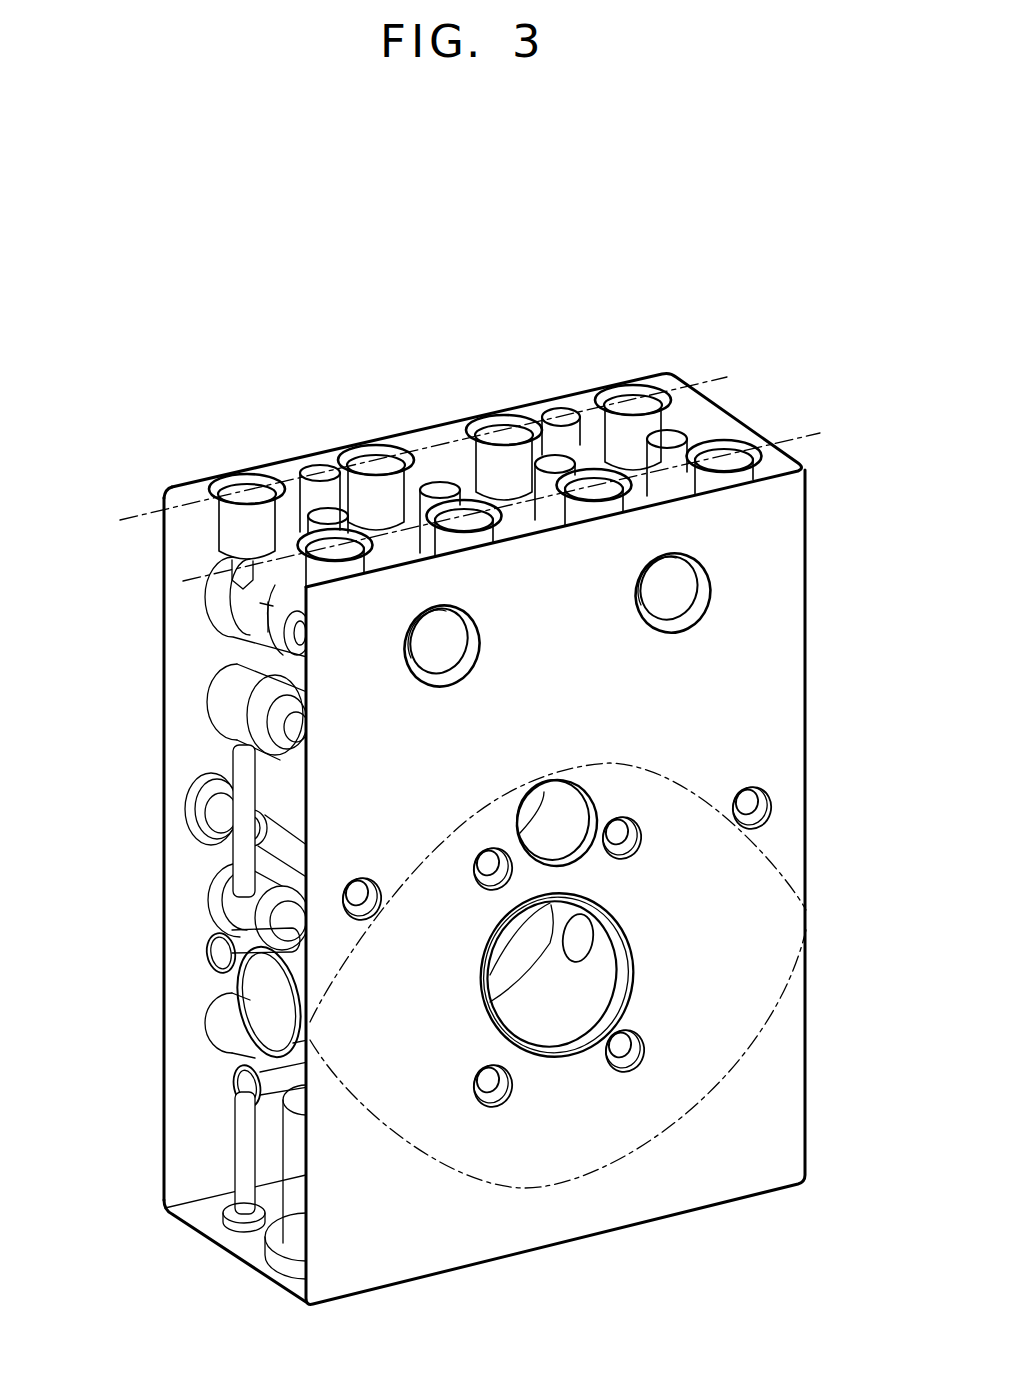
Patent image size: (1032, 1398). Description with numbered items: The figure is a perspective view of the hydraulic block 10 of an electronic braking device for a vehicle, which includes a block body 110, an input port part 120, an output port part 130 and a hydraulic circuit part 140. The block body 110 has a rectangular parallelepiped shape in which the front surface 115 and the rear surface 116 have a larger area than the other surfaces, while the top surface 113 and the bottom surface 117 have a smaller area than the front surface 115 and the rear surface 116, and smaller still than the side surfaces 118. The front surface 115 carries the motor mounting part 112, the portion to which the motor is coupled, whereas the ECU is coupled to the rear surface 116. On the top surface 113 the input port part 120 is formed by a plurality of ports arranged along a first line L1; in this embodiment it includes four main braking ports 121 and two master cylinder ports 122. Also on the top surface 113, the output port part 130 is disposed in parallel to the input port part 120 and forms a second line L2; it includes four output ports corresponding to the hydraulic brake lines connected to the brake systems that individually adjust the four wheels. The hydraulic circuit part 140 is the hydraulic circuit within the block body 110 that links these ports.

The hydraulic block 10 is at (701, 348).
The block body 110 is at (158, 825).
The motor mounting part 112 is at (772, 875).
The top surface 113 is at (732, 428).
The front surface 115 is at (780, 712).
The rear surface 116 is at (165, 927).
The bottom surface 117 is at (222, 1257).
The side surface 118 is at (203, 753).
The input port part 120 is at (193, 330).
The main braking port 121 is at (247, 490).
The master cylinder port 122 is at (320, 473).
The output port part 130 is at (348, 552).
The hydraulic circuit part 140 is at (257, 607).
The first line L1 is at (717, 378).
The second line L2 is at (812, 431).